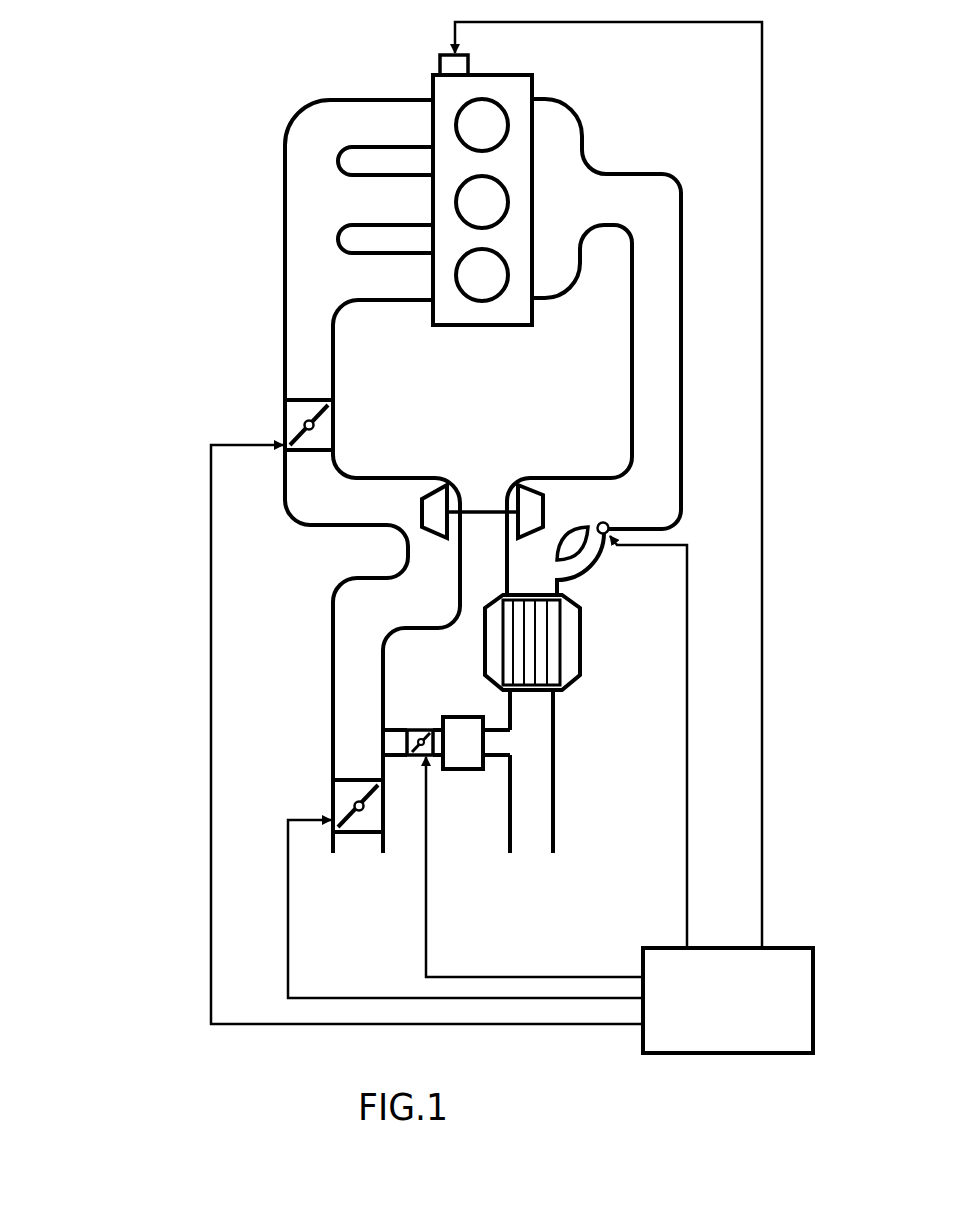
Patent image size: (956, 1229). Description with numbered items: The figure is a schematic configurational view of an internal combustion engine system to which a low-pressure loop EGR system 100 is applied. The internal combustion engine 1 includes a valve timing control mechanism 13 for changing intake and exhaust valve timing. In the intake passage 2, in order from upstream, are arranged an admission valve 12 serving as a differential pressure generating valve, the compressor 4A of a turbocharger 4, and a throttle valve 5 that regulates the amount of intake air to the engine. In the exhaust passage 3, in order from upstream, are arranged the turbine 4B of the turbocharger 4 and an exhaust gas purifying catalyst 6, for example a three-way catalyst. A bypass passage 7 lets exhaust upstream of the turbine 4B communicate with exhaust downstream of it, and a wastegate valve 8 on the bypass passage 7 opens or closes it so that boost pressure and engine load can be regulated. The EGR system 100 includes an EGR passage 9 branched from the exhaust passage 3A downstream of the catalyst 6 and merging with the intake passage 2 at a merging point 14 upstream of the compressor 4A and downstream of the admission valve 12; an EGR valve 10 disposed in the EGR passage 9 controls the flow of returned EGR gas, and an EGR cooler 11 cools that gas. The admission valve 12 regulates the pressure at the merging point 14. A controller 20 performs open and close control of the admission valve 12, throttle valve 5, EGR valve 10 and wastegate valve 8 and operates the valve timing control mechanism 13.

The internal combustion engine 1 is at (450, 97).
The intake passage 2 is at (343, 632).
The exhaust passage 3 is at (668, 375).
The exhaust passage downstream of the exhaust gas purifying catalyst 3A is at (538, 743).
The turbocharger 4 is at (489, 458).
The compressor 4A is at (437, 505).
The turbine 4B is at (528, 500).
The throttle valve 5 is at (293, 423).
The exhaust gas purifying catalyst 6 is at (580, 648).
The bypass passage 7 is at (578, 565).
The wastegate valve 8 is at (598, 552).
The EGR passage 9 is at (493, 745).
The EGR valve 10 is at (425, 757).
The EGR cooler 11 is at (455, 765).
The admission valve 12 is at (333, 797).
The valve timing control mechanism 13 is at (440, 57).
The merging point 14 is at (360, 743).
The controller 20 is at (770, 958).
The EGR system 100 is at (203, 648).